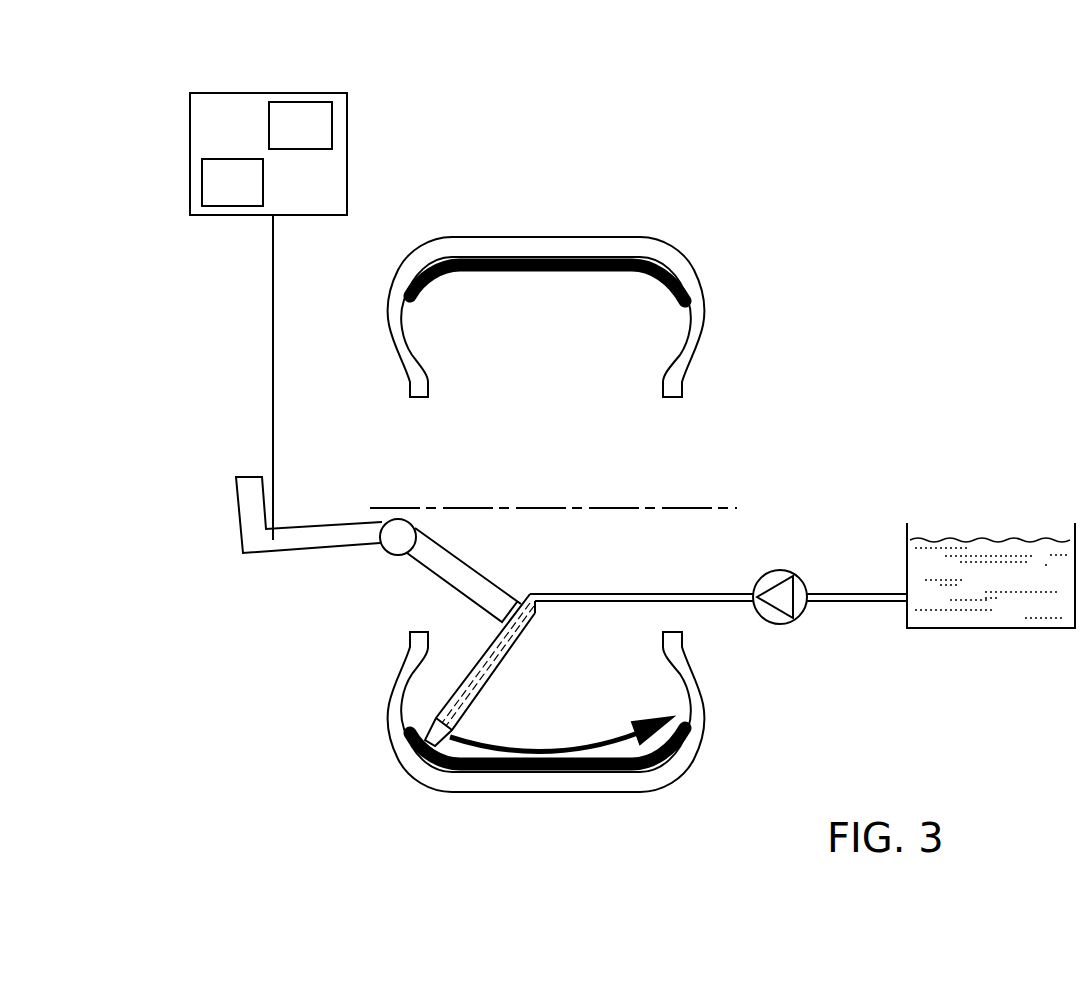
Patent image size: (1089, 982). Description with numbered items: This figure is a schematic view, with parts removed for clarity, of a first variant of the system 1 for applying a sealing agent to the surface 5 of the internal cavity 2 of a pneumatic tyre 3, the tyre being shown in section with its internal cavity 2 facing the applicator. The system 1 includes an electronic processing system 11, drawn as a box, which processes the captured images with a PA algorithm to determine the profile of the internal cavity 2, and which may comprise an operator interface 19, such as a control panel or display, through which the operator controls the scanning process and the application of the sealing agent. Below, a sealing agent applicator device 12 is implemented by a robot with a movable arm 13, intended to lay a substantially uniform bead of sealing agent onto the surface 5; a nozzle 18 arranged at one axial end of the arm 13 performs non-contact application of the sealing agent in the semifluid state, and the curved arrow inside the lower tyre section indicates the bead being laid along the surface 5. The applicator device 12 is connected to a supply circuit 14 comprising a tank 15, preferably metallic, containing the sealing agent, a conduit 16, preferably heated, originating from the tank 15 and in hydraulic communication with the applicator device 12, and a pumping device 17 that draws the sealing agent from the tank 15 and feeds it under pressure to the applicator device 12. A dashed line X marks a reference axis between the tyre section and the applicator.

The system 1 is at (776, 352).
The internal cavity 2 is at (620, 313).
The pneumatic tyre 3 is at (550, 247).
The surface 5 is at (424, 340).
The electronic processing system 11 is at (140, 150).
The sealing agent applicator device 12 is at (252, 577).
The arm 13 is at (470, 580).
The circuit 14 is at (910, 503).
The tank 15 is at (965, 618).
The conduit 16 is at (713, 602).
The pumping device 17 is at (772, 620).
The nozzle 18 is at (452, 753).
The operator interface 19 is at (300, 125).
The axis X is at (703, 508).